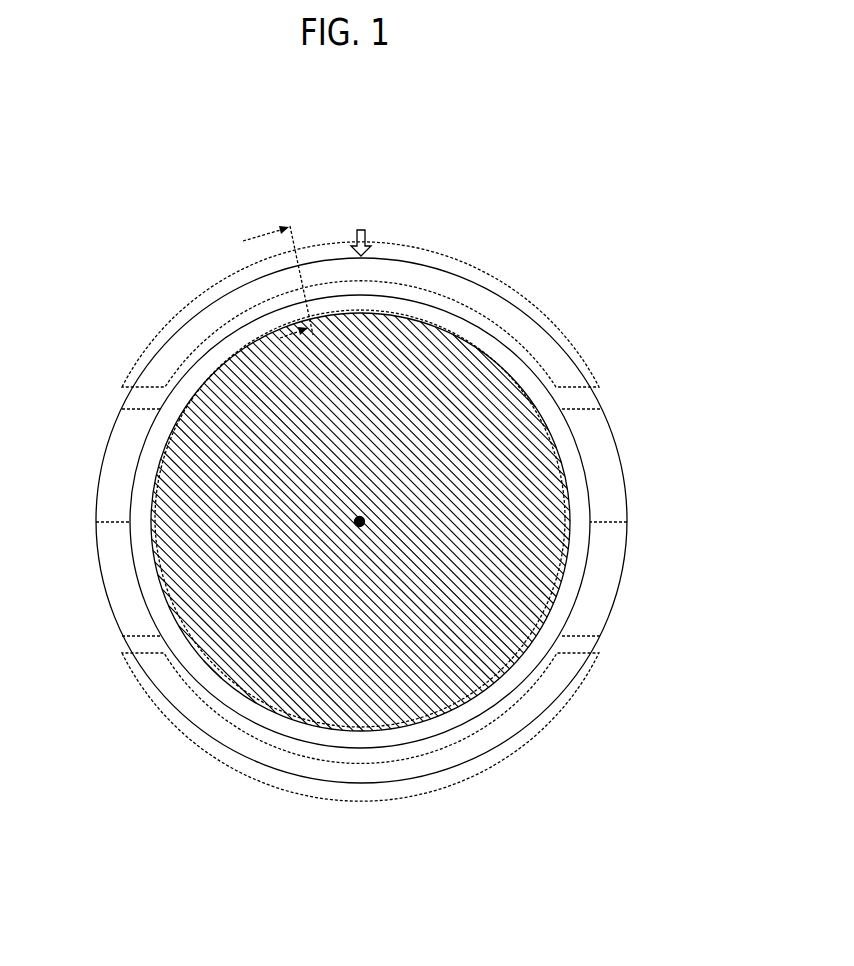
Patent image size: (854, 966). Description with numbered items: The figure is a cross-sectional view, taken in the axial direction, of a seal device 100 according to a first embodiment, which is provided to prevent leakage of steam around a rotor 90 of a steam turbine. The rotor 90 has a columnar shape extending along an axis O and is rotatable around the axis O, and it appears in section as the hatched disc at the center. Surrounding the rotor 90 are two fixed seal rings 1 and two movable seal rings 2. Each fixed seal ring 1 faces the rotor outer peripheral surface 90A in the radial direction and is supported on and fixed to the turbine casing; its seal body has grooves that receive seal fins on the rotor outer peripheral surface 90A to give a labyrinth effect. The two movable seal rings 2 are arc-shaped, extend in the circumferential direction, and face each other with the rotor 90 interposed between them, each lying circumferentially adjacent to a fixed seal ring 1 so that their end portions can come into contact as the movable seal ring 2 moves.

The seal device 100 is at (110, 187).
The fixed seal ring 1 is at (110, 482).
The movable seal ring 2 is at (509, 303).
The rotor 90 is at (548, 507).
The rotor outer peripheral surface 90A is at (567, 578).
The axis O is at (357, 527).